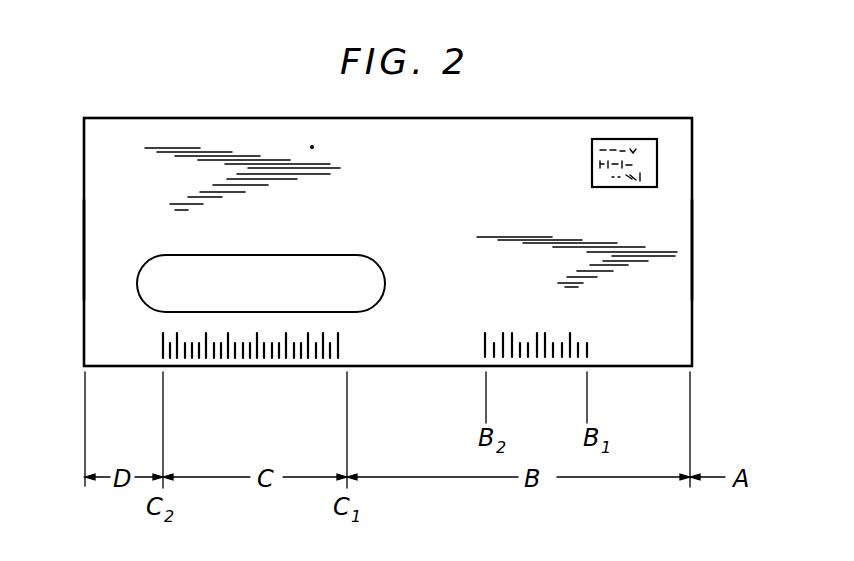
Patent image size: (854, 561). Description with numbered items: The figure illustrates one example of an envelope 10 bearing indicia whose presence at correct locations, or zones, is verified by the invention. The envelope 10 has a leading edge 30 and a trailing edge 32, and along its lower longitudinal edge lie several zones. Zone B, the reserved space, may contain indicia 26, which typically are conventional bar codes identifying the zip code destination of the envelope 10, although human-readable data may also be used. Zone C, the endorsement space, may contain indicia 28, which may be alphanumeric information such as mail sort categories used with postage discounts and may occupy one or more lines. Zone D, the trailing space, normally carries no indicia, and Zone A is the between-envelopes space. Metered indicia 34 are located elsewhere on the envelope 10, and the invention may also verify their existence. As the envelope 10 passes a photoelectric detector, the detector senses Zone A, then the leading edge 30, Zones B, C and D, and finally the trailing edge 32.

The envelope 10 is at (228, 118).
The indicia 26 is at (569, 324).
The indicia 28 is at (352, 336).
The leading edge 30 is at (696, 244).
The trailing edge 32 is at (84, 251).
The metered indicia 34 is at (607, 140).